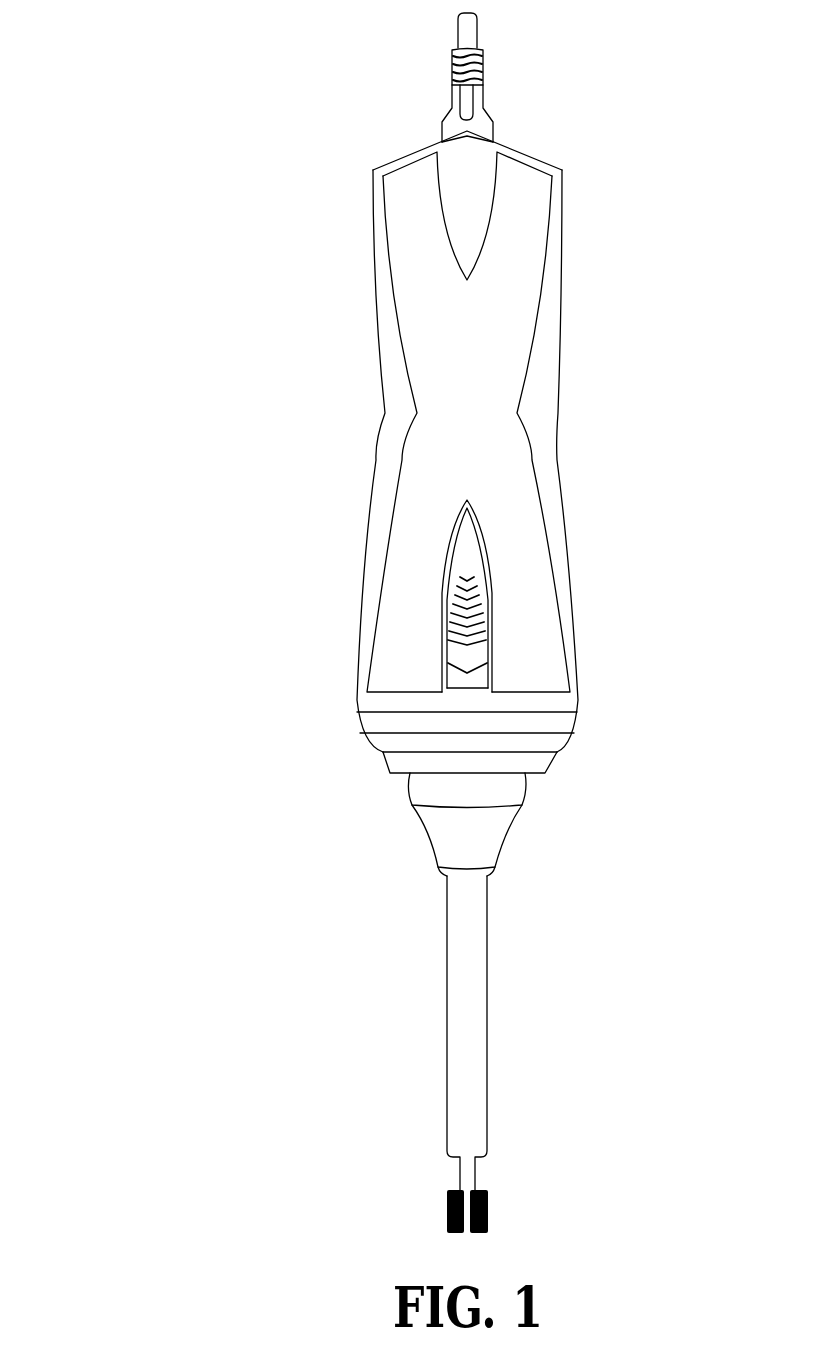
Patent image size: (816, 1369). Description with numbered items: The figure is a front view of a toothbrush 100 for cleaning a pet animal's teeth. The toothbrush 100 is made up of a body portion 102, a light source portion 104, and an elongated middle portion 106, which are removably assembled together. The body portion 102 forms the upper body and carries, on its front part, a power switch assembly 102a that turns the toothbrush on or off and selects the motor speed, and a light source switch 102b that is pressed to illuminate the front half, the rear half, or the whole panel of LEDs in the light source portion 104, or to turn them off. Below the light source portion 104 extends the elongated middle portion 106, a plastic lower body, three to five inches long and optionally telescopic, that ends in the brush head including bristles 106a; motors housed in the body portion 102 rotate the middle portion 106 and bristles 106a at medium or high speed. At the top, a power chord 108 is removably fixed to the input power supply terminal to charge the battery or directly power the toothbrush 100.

The toothbrush 100 is at (181, 146).
The body portion 102 is at (558, 455).
The power switch assembly 102a is at (487, 578).
The light source switch 102b is at (480, 663).
The light source portion 104 is at (563, 745).
The elongated middle portion 106 is at (487, 1028).
The brush head including bristles 106a is at (489, 1200).
The power chord 108 is at (493, 118).